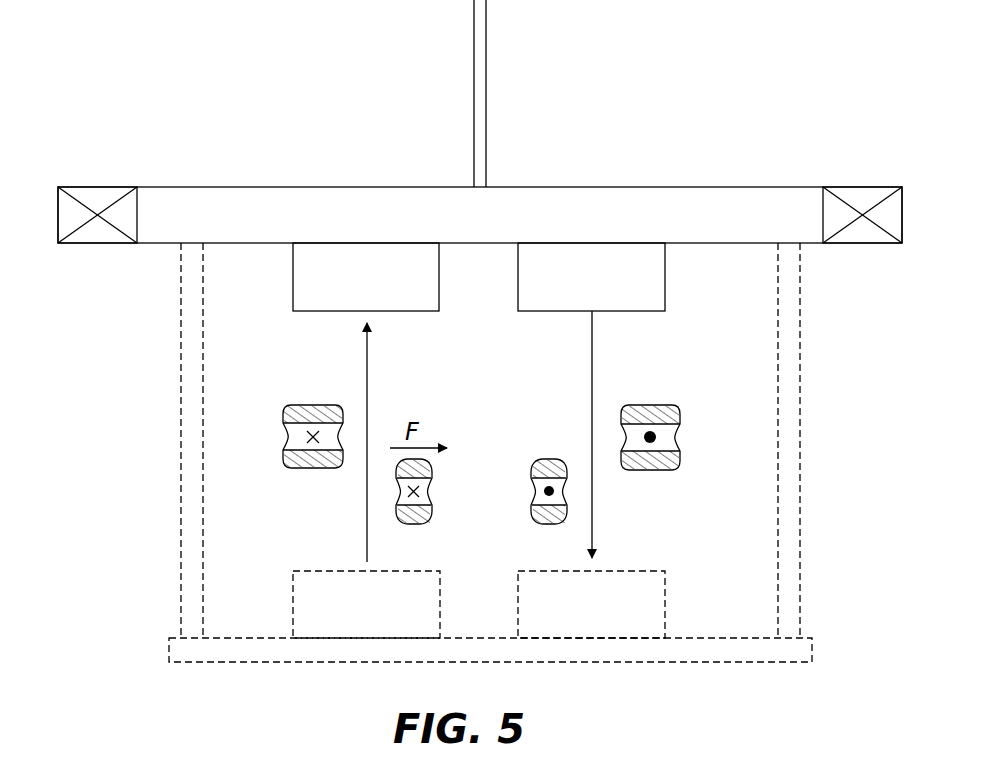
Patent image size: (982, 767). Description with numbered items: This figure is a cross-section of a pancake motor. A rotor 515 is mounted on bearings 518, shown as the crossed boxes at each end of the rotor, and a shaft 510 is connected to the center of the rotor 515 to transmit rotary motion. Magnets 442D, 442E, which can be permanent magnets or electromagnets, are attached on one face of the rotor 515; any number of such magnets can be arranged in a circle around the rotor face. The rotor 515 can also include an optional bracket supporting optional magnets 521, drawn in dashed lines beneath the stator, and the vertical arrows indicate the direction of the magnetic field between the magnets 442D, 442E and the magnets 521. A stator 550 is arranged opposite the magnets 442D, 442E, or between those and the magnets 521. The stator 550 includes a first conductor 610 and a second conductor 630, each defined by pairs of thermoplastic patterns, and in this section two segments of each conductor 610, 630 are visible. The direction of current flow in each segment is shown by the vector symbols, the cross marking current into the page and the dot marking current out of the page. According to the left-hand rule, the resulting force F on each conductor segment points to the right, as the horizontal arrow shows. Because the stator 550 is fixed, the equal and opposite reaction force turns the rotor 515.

The shaft 510 is at (473, 58).
The rotor 515 is at (350, 187).
The bearings 518 is at (97, 187).
The magnet 442D is at (293, 280).
The magnet 442E is at (665, 278).
The optional magnets 521 is at (290, 607).
The stator 550 is at (158, 537).
The first conductor 610 is at (690, 435).
The second conductor 630 is at (690, 492).